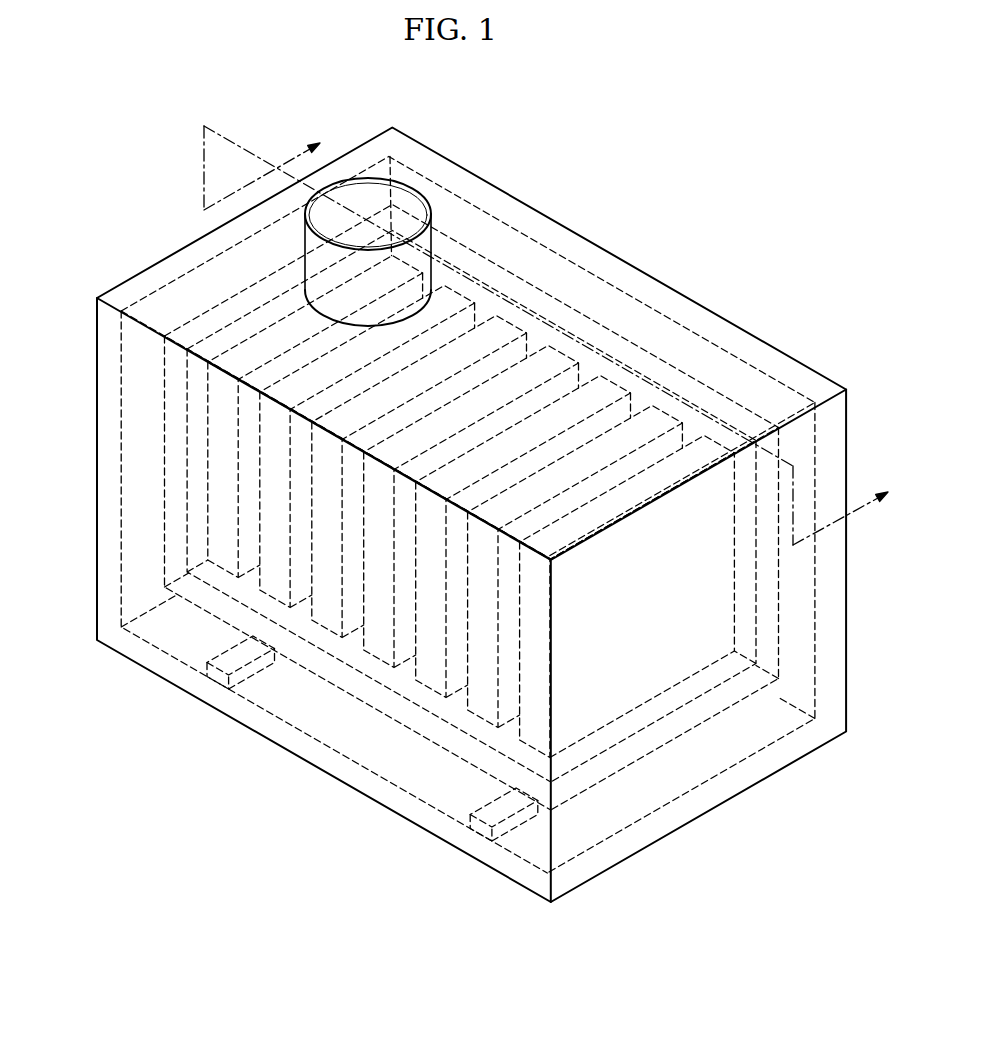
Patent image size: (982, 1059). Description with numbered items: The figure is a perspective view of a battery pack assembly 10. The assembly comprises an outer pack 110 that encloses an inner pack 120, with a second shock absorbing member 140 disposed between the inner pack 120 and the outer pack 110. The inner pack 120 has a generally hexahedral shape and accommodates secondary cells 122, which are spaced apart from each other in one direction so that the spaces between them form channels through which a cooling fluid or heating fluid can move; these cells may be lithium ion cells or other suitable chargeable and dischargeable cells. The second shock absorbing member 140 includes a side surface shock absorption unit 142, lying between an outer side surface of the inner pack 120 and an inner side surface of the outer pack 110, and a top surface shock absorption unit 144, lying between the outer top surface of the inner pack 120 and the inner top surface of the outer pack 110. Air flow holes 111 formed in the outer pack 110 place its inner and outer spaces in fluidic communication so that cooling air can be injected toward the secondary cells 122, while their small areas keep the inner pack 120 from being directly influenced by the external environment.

The battery pack assembly 10 is at (650, 158).
The outer pack 110 is at (168, 268).
The air flow holes 111 is at (228, 677).
The inner pack 120 is at (175, 517).
The secondary cells 122 is at (485, 681).
The second shock absorbing member 140 is at (436, 537).
The side surface shock absorption unit 142 is at (133, 417).
The top surface shock absorption unit 144 is at (732, 368).